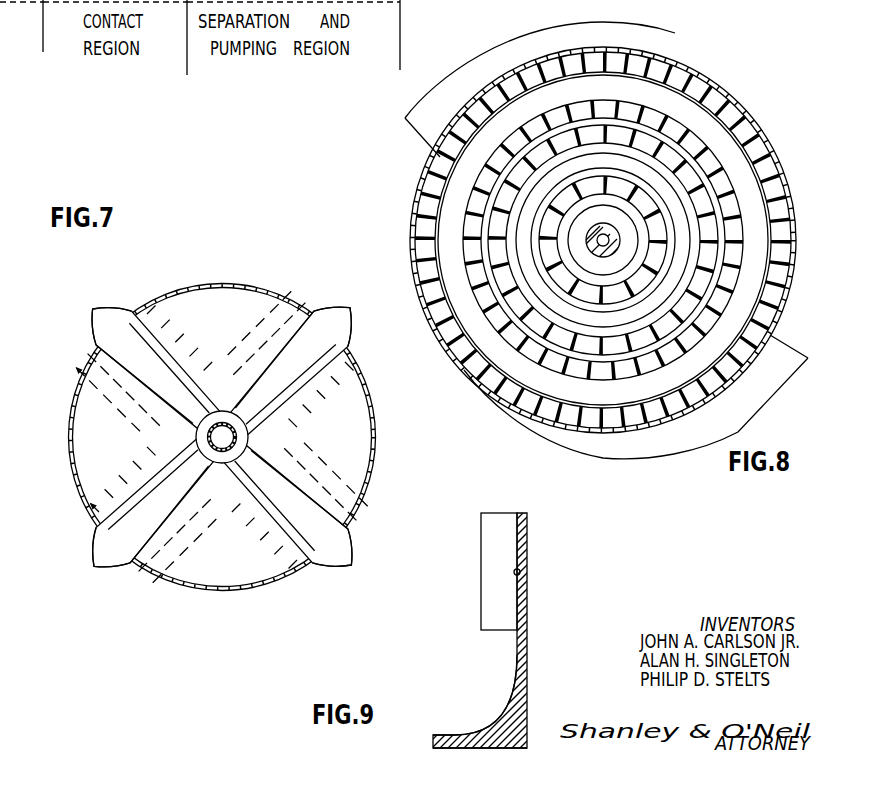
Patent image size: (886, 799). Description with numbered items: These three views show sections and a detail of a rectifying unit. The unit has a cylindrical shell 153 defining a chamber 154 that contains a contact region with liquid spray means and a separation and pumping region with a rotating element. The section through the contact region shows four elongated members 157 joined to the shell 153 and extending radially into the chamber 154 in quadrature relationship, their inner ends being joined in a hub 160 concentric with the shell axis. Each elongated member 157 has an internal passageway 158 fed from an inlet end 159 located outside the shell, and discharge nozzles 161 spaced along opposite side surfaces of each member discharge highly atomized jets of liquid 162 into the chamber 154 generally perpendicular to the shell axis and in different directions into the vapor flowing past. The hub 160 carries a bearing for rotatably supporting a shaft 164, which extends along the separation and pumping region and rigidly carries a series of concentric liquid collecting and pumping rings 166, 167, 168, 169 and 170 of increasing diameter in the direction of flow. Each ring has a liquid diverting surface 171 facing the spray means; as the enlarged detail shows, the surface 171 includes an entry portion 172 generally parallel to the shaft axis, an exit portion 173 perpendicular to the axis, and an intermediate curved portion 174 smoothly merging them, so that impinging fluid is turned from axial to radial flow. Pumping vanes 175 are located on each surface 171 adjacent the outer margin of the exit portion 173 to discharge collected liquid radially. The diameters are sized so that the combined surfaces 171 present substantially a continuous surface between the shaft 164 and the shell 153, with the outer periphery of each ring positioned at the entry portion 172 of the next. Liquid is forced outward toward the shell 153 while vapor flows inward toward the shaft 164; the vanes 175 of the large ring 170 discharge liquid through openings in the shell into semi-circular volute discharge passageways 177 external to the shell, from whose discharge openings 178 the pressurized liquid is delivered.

In FIG. 7, the cylindrical shell 153 is at (374, 427).
In FIG. 7, the chamber 154 is at (236, 313).
In FIG. 7, the elongated member 157 is at (332, 520).
In FIG. 7, the internal passageway 158 is at (292, 378).
In FIG. 7, the inlet end 159 is at (353, 566).
In FIG. 7, the hub 160 is at (196, 437).
In FIG. 7, the discharge nozzles 161 is at (282, 418).
In FIG. 7, the jets of liquid 162 is at (190, 505).
In FIG. 8, the shaft 164 is at (624, 232).
In FIG. 8, the liquid collecting and pumping ring 166 is at (641, 341).
In FIG. 8, the liquid collecting and pumping ring 167 is at (763, 258).
In FIG. 8, the liquid collecting and pumping ring 168 is at (705, 114).
In FIG. 8, the liquid collecting and pumping ring 169 is at (604, 106).
In FIG. 8, the liquid collecting and pumping ring 170 is at (452, 269).
In FIG. 9, the liquid diverting surface 171 is at (514, 658).
In FIG. 8, the entry portion 172 is at (522, 336).
In FIG. 9, the entry portion 172 is at (455, 730).
In FIG. 9, the exit portion 173 is at (521, 571).
In FIG. 9, the intermediate curved portion 174 is at (510, 711).
In FIG. 8, the pumping vanes 175 is at (772, 310).
In FIG. 9, the pumping vanes 175 is at (480, 562).
In FIG. 8, the volute discharge passageway 177 is at (776, 392).
In FIG. 8, the discharge opening 178 is at (807, 357).